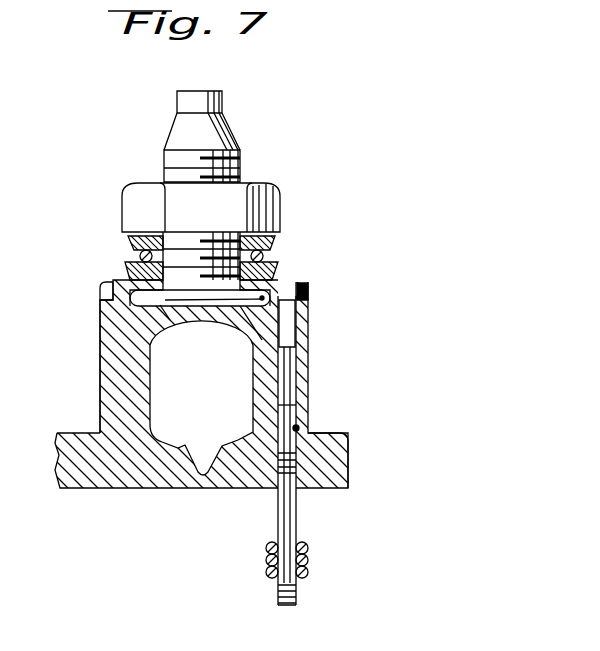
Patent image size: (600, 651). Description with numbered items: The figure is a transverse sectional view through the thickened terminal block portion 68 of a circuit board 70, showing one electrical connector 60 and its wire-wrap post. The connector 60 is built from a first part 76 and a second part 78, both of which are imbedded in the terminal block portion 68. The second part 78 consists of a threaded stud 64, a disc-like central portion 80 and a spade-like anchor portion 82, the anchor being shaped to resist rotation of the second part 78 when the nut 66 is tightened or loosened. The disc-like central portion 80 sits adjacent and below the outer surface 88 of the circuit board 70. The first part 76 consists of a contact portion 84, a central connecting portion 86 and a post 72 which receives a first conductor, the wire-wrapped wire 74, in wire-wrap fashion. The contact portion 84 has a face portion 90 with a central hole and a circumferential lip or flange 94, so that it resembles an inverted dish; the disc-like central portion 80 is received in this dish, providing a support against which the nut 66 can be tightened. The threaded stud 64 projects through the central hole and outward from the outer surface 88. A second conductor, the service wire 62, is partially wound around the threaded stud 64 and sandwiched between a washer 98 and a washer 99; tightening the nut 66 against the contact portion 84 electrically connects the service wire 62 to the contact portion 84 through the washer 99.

The electrical connector 60 is at (274, 148).
The threaded stud 64 is at (170, 158).
The nut 66 is at (277, 204).
The service wire 62 is at (142, 253).
The washer 98 is at (280, 236).
The face portion 90 is at (124, 268).
The washer 99 is at (270, 263).
The outer surface 88 is at (100, 273).
The circumferential lip or flange 94 is at (108, 299).
The contact portion 84 is at (296, 282).
The disc-like central portion 80 is at (143, 310).
The first part 76 is at (297, 321).
The second part 78 is at (137, 370).
The spade-like anchor portion 82 is at (212, 396).
The central connecting portion 86 is at (300, 425).
The circuit board 70 is at (338, 433).
The terminal block portion 68 is at (80, 490).
The wire-wrap post 72 is at (296, 522).
The wire-wrapped wire 74 is at (307, 572).